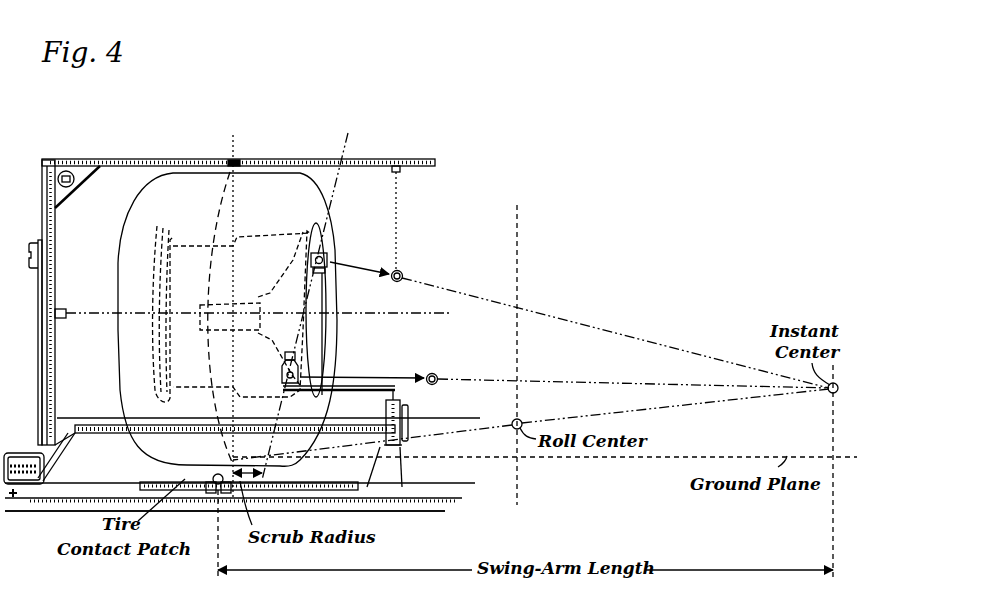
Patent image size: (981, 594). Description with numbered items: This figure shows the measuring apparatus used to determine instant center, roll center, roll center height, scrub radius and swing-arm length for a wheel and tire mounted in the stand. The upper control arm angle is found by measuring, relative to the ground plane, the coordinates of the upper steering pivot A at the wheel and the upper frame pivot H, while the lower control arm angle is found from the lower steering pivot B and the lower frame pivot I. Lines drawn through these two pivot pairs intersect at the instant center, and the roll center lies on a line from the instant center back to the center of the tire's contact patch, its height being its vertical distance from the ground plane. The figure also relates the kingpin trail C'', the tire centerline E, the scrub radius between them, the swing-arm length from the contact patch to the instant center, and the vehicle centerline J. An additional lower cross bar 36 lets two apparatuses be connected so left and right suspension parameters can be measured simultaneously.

The upper steering pivot A is at (328, 258).
The lower steering pivot B is at (300, 372).
The upper frame pivot H is at (403, 273).
The lower frame pivot I is at (438, 376).
The vehicle centerline J is at (515, 256).
The tire centerline E is at (233, 455).
The kingpin trail C'' is at (302, 471).
The lower cross bar 36 is at (447, 502).